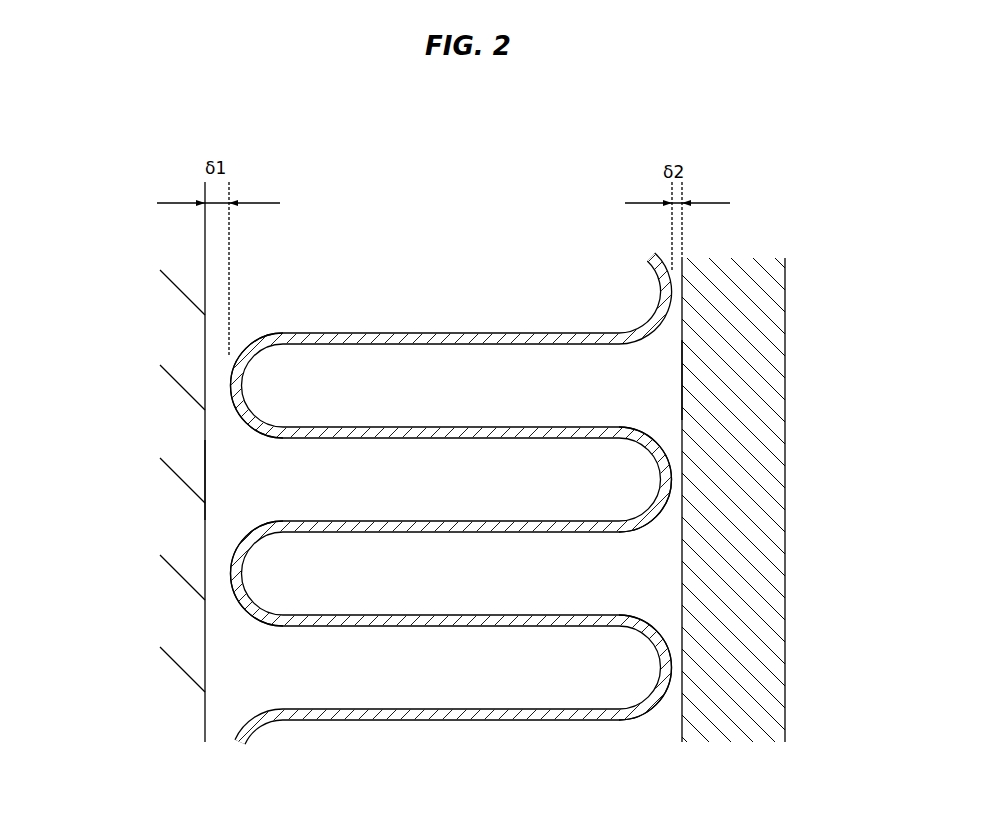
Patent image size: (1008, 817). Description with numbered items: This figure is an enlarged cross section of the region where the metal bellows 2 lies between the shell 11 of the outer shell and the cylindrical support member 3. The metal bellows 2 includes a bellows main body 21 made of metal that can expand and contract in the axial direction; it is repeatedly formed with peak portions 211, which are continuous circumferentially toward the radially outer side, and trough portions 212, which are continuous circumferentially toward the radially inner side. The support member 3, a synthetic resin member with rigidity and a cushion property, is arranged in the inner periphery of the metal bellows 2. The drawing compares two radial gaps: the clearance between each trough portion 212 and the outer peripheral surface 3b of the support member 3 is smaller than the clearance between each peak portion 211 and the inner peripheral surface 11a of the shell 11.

The metal bellows 2 is at (451, 480).
The bellows main body 21 is at (447, 325).
The peak portions 211 is at (235, 381).
The trough portions 212 is at (671, 296).
The shell 11 is at (177, 671).
The inner peripheral surface 11a is at (206, 474).
The support member 3 is at (756, 584).
The outer peripheral surface 3b is at (682, 381).